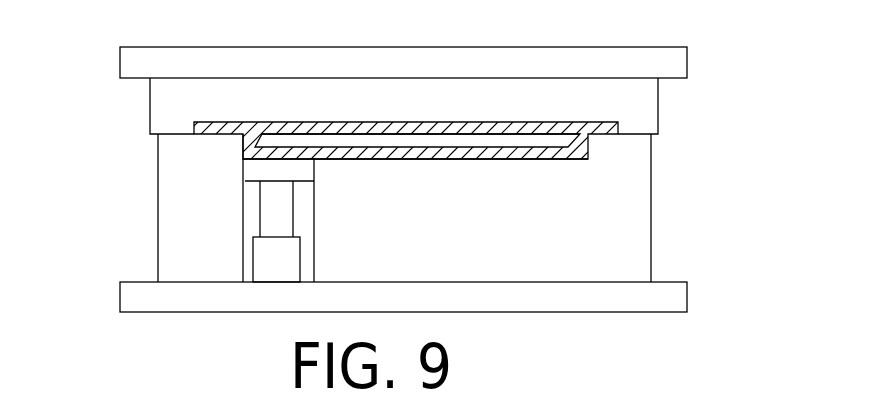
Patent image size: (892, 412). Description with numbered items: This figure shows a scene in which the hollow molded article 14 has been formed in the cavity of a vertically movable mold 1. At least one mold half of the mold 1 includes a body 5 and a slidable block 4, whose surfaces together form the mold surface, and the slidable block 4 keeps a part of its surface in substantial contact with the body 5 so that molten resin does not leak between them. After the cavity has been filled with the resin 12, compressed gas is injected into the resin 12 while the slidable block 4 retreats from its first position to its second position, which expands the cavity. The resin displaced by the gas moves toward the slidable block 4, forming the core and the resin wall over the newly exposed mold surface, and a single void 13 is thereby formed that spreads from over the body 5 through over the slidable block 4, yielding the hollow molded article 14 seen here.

The mold 1 is at (125, 135).
The slidable block 4 is at (292, 169).
The body 5 is at (173, 207).
The resin 12 is at (590, 145).
The void 13 is at (490, 140).
The hollow molded article 14 is at (620, 122).